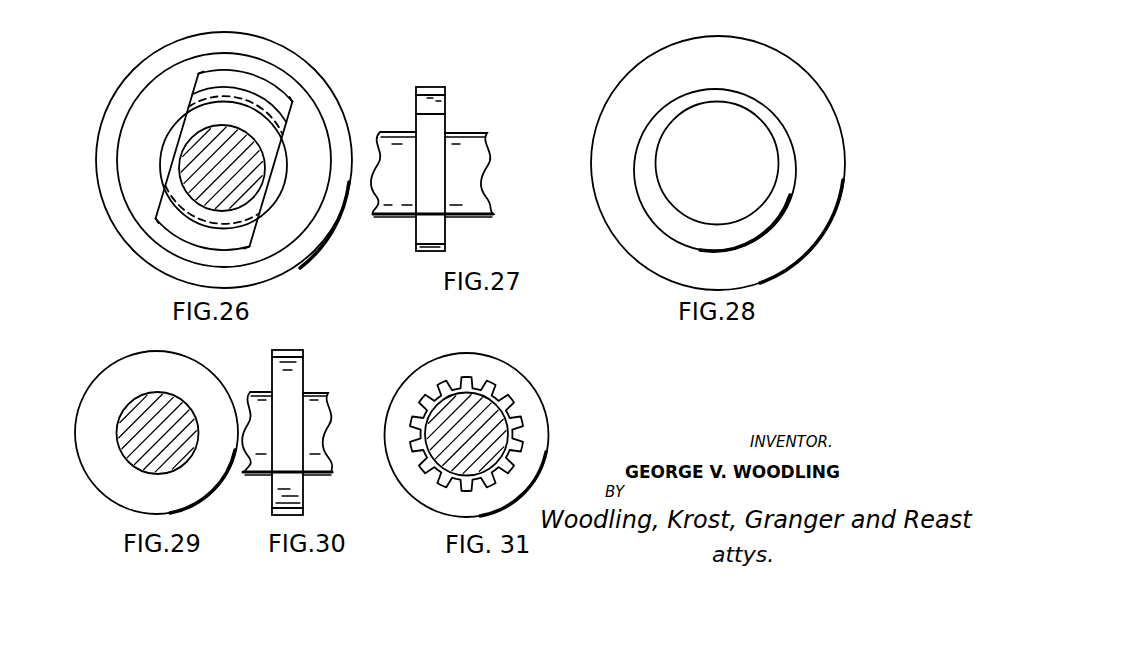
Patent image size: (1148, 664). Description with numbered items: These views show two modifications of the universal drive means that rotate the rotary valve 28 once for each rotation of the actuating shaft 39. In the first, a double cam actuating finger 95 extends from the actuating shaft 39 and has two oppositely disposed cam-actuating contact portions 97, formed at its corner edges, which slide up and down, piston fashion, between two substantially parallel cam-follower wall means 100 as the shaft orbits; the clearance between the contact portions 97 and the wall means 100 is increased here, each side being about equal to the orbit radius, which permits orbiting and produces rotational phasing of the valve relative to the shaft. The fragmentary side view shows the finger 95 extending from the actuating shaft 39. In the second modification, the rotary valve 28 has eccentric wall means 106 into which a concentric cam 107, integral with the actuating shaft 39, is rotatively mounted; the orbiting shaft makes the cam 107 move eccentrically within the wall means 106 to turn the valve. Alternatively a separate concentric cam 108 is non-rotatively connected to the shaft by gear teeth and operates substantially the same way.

In FIG. 26, the rotary valve 28 is at (280, 46).
In FIG. 28, the rotary valve 28 is at (815, 78).
In FIG. 26, the actuating shaft 39 is at (254, 190).
In FIG. 27, the actuating shaft 39 is at (487, 137).
In FIG. 29, the actuating shaft 39 is at (173, 453).
In FIG. 30, the actuating shaft 39 is at (320, 407).
In FIG. 31, the actuating shaft 39 is at (477, 455).
In FIG. 26, the cam actuating finger 95 is at (240, 96).
In FIG. 27, the cam actuating finger 95 is at (425, 87).
In FIG. 26, the cam-actuating contact portions 97 is at (200, 90).
In FIG. 26, the cam-follower wall means 100 is at (191, 97).
In FIG. 28, the eccentric wall means 106 is at (790, 205).
In FIG. 29, the concentric cam 107 is at (193, 375).
In FIG. 30, the concentric cam 107 is at (297, 362).
In FIG. 31, the concentric cam 108 is at (540, 395).